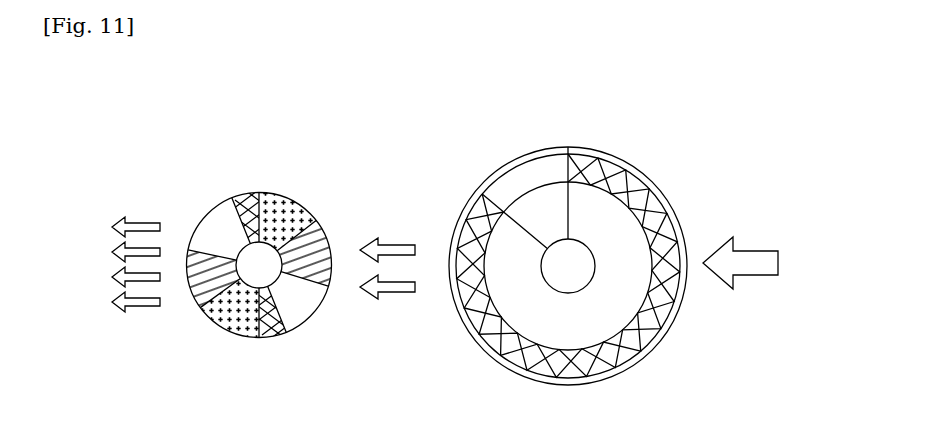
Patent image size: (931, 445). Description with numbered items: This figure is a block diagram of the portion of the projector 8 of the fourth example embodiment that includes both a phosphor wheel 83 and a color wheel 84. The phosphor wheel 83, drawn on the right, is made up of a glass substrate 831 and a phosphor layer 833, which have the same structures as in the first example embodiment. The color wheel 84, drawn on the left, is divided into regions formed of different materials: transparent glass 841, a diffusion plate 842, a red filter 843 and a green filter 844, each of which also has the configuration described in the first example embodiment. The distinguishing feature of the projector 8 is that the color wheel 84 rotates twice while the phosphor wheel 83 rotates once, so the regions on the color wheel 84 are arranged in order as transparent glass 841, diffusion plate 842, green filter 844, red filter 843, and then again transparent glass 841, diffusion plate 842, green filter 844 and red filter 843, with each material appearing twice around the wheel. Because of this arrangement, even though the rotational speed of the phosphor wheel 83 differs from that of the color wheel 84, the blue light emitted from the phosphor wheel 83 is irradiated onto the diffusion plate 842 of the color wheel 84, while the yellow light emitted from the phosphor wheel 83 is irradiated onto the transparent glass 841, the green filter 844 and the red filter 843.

The projector 8 is at (676, 162).
The phosphor wheel 83 is at (460, 107).
The glass substrate 831 is at (500, 186).
The phosphor layer 833 is at (540, 160).
The color wheel 84 is at (388, 383).
The transparent glass 841 is at (217, 229).
The diffusion plate 842 is at (203, 247).
The red filter 843 is at (204, 293).
The green filter 844 is at (200, 290).